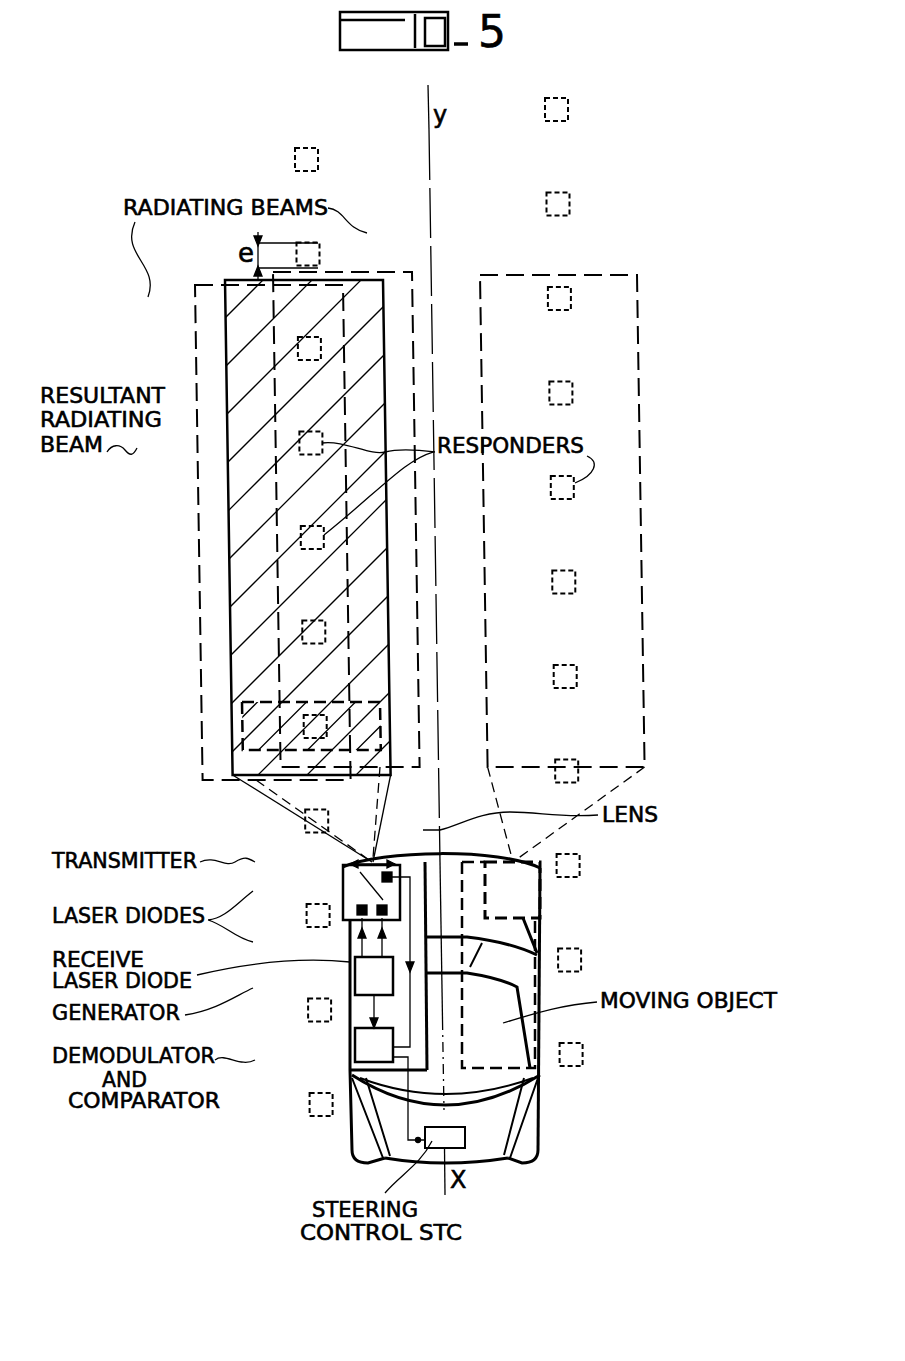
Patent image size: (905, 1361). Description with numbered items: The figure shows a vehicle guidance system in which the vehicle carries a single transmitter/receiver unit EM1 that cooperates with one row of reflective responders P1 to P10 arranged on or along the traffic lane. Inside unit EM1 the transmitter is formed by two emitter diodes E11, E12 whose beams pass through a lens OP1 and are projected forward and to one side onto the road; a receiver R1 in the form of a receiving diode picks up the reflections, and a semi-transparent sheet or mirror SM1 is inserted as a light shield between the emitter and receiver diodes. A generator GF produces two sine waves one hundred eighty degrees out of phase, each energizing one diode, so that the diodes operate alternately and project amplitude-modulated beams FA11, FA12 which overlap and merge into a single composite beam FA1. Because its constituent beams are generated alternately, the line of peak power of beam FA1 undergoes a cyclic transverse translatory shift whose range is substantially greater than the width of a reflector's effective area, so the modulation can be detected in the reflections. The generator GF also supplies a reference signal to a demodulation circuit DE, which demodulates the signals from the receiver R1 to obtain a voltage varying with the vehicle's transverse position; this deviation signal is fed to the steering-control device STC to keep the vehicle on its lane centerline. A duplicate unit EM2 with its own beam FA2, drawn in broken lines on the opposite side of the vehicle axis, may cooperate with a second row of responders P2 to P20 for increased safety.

The amplitude-modulated beam FA11 is at (207, 367).
The amplitude-modulated beam FA12 is at (398, 295).
The composite beam FA1 is at (247, 468).
The beam of second transmitter/receiver unit FA2 is at (627, 298).
The reflective responder P10 is at (311, 142).
The reflective responder P20 is at (566, 94).
The reflective responder P1 is at (325, 1128).
The reflective responder P2 is at (576, 1074).
The semi-transparent sheet or mirror SM1 is at (368, 862).
The lens OP1 is at (378, 857).
The transmitter/receiver unit EM1 is at (345, 886).
The second transmitter/receiver unit EM2 is at (540, 886).
The emitter diode E11 is at (382, 916).
The emitter diode E12 is at (357, 907).
The receiver R1 is at (402, 962).
The oscillation generator GF is at (355, 975).
The demodulation circuit DE is at (355, 1050).
The steering-control device STC is at (445, 1137).